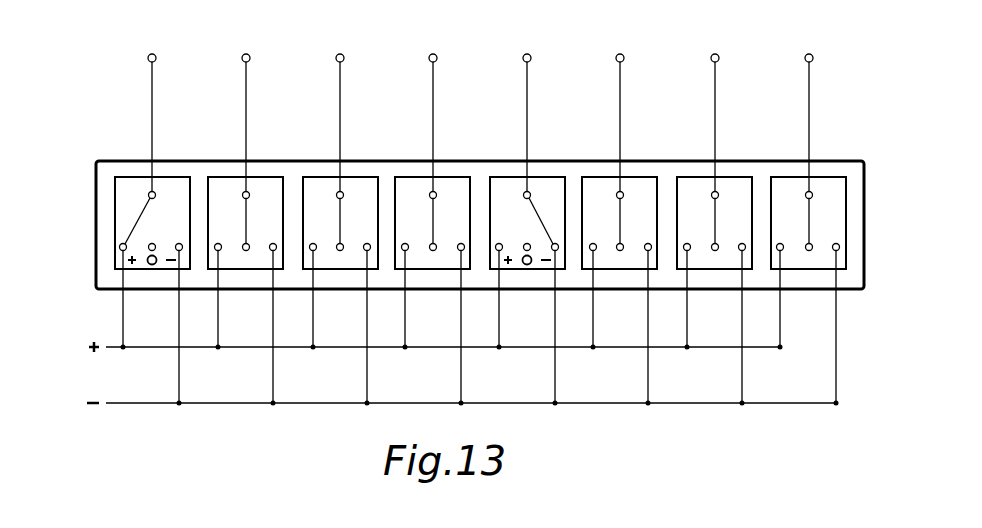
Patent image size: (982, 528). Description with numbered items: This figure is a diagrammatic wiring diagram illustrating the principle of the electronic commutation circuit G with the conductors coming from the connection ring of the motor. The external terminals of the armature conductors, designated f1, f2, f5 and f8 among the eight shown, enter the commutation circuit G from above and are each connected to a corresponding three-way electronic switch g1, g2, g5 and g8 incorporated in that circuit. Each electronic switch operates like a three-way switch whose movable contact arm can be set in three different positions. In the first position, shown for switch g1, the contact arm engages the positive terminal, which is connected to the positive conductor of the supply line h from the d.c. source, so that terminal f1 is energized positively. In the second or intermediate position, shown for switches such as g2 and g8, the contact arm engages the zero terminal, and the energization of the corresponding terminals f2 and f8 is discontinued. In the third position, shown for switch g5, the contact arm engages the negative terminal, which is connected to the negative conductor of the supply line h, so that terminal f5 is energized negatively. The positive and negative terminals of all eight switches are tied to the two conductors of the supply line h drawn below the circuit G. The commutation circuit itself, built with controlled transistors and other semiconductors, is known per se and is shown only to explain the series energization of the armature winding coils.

The electronic commutation circuit G is at (96, 237).
The external terminal f1 is at (156, 56).
The external terminal f2 is at (250, 56).
The external terminal f5 is at (531, 56).
The external terminal f8 is at (813, 56).
The three-way electronic switch g1 is at (168, 177).
The three-way electronic switch g2 is at (262, 177).
The three-way electronic switch g5 is at (546, 177).
The three-way electronic switch g8 is at (825, 177).
The supply line from the d.c. source h is at (352, 402).